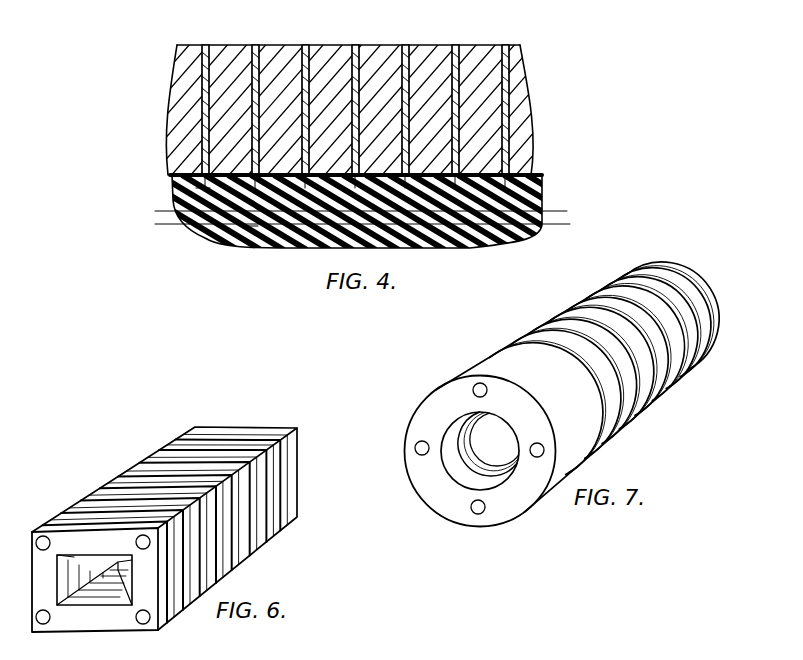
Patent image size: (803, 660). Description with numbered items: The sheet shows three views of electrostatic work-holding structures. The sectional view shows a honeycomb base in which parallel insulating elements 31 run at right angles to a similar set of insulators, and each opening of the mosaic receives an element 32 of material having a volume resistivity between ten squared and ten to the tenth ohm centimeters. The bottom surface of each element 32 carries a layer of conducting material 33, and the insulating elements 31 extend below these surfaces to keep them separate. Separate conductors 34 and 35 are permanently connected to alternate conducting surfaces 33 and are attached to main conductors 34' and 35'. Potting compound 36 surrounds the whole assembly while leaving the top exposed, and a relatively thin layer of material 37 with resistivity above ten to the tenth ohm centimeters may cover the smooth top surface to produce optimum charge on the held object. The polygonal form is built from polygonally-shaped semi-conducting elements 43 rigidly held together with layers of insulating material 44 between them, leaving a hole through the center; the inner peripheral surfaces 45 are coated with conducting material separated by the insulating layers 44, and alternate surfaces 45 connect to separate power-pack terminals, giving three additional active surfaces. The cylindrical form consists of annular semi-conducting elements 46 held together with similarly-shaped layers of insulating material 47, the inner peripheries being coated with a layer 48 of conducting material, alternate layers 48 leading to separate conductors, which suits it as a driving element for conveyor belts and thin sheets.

In FIG. 4, the insulating elements 31 is at (407, 47).
In FIG. 4, the element 32 is at (296, 47).
In FIG. 4, the layer of conducting material 33 is at (170, 178).
In FIG. 4, the conductor 34 is at (195, 195).
In FIG. 4, the main conductor 34' is at (371, 195).
In FIG. 4, the conductor 35 is at (258, 233).
In FIG. 4, the main conductor 35' is at (383, 215).
In FIG. 4, the potting compound 36 is at (505, 236).
In FIG. 4, the layer of material 37 is at (522, 47).
In FIG. 6, the semi-conducting elements 43 is at (112, 620).
In FIG. 6, the layers of insulating material 44 is at (150, 462).
In FIG. 6, the inner peripheral surfaces 45 is at (62, 583).
In FIG. 7, the annular semi-conducting elements 46 is at (420, 414).
In FIG. 7, the layers of insulating material 47 is at (480, 368).
In FIG. 7, the layer of conducting material 48 is at (452, 462).